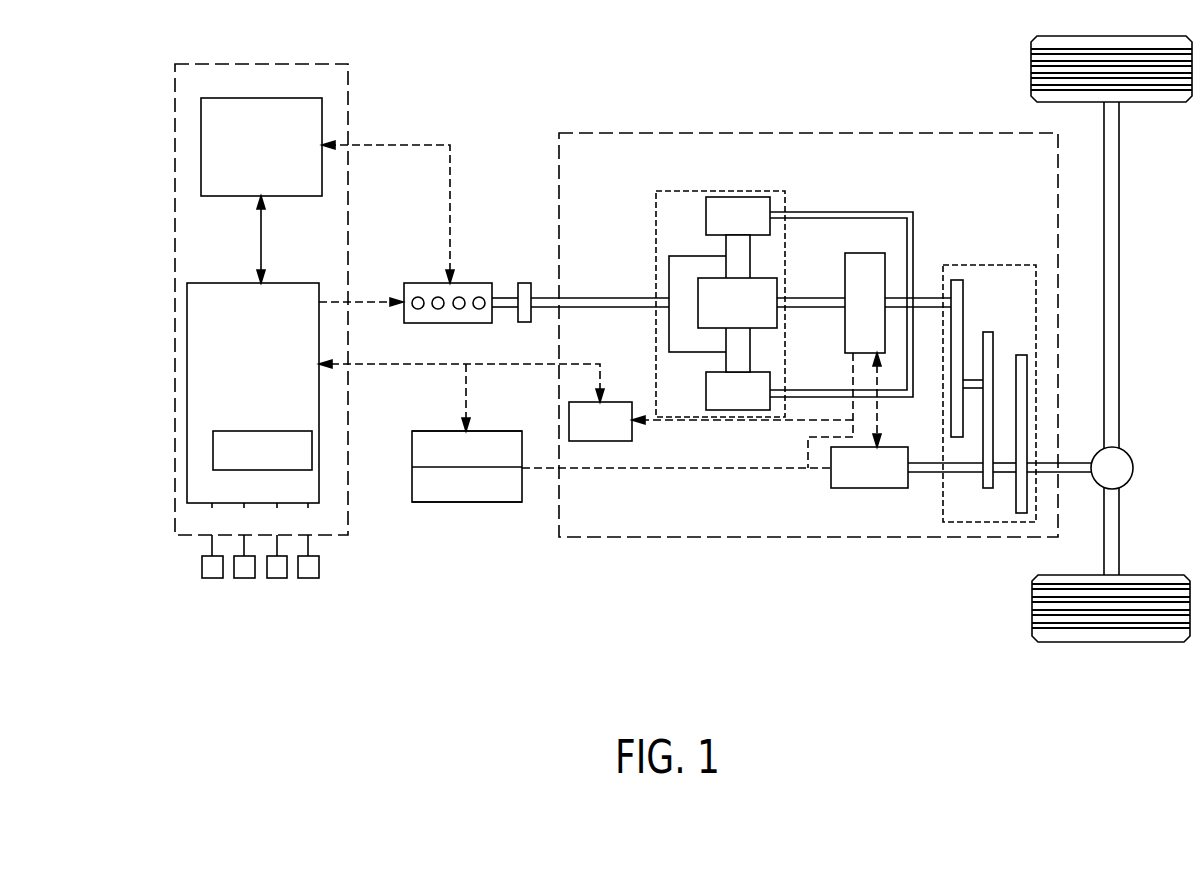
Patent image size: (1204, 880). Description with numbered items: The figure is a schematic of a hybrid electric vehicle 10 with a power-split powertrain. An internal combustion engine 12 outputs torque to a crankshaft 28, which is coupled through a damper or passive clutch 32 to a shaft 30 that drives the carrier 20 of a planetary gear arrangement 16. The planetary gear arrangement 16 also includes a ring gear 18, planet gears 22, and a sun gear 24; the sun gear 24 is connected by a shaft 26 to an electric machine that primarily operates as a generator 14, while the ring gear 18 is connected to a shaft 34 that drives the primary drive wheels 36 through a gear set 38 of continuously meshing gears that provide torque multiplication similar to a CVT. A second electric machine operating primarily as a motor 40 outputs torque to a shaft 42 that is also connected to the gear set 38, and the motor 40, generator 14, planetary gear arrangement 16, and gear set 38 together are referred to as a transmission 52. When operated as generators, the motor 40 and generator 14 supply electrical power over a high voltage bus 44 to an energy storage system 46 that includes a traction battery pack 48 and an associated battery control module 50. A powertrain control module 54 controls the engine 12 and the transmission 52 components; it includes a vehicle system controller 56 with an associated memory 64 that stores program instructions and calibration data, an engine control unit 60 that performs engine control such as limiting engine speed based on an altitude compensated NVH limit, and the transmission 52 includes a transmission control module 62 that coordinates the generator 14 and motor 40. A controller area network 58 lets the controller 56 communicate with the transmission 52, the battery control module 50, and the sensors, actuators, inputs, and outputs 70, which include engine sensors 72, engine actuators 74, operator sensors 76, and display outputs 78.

The hybrid electric vehicle 10 is at (902, 78).
The internal combustion engine 12 is at (428, 281).
The electric machine (generator) 14 is at (863, 252).
The planetary gear arrangement 16 is at (792, 203).
The ring gear 18 is at (705, 217).
The carrier 20 is at (669, 274).
The planet gears 22 is at (726, 249).
The sun gear 24 is at (764, 329).
The shaft 26 is at (807, 297).
The crankshaft 28 is at (503, 297).
The shaft 30 is at (590, 297).
The passive clutch 32 is at (526, 282).
The shaft 34 is at (922, 297).
The primary drive wheels 36 is at (1140, 103).
The gear set 38 is at (997, 264).
The electric machine (motor) 40 is at (830, 478).
The shaft 42 is at (913, 462).
The high voltage bus 44 is at (668, 471).
The energy storage system 46 is at (412, 454).
The traction battery pack 48 is at (522, 430).
The battery control module 50 is at (467, 503).
The transmission 52 is at (692, 132).
The powertrain control module 54 is at (348, 76).
The vehicle system controller 56 is at (319, 321).
The controller area network 58 is at (393, 367).
The engine control unit 60 is at (322, 118).
The transmission control module 62 is at (618, 401).
The memory 64 is at (213, 452).
The sensors, actuators, inputs, and outputs 70 is at (254, 635).
The engine sensors 72 is at (210, 579).
The engine actuators 74 is at (243, 579).
The operator sensors 76 is at (277, 579).
The display outputs 78 is at (308, 579).